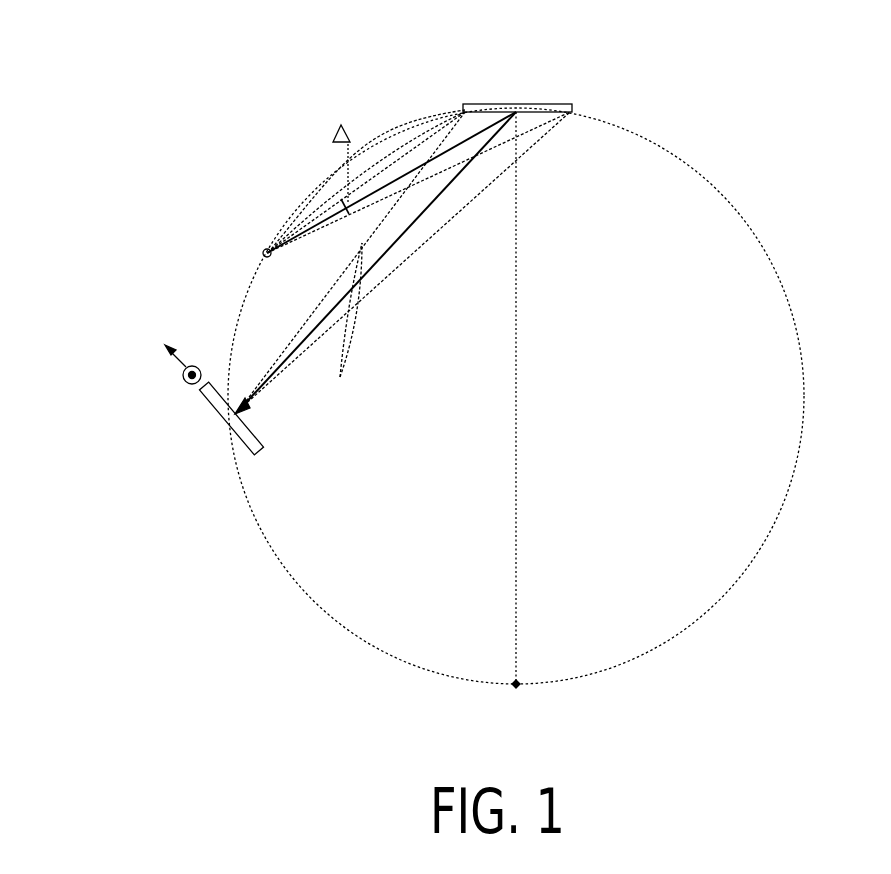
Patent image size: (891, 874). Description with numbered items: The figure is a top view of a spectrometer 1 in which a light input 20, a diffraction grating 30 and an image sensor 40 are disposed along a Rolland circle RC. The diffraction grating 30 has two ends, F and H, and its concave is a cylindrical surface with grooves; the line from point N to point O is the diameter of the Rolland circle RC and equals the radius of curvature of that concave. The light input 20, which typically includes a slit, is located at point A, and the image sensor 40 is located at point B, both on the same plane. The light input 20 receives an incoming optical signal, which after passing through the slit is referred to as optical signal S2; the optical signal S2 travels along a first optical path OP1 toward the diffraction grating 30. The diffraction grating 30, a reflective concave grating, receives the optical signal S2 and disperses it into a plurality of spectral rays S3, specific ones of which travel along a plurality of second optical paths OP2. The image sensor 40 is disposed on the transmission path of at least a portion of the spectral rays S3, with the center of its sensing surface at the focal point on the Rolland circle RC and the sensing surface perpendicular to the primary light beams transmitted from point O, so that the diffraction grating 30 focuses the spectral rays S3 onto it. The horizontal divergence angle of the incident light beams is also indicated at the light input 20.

The spectrometer 1 is at (869, 96).
The light input 20 is at (265, 250).
The diffraction grating 30 is at (567, 103).
The image sensor 40 is at (210, 407).
The Rolland circle RC is at (806, 392).
The optical signal S2 is at (350, 268).
The spectral rays S3 is at (338, 300).
The first optical path OP1 is at (322, 218).
The second optical paths OP2 is at (341, 372).